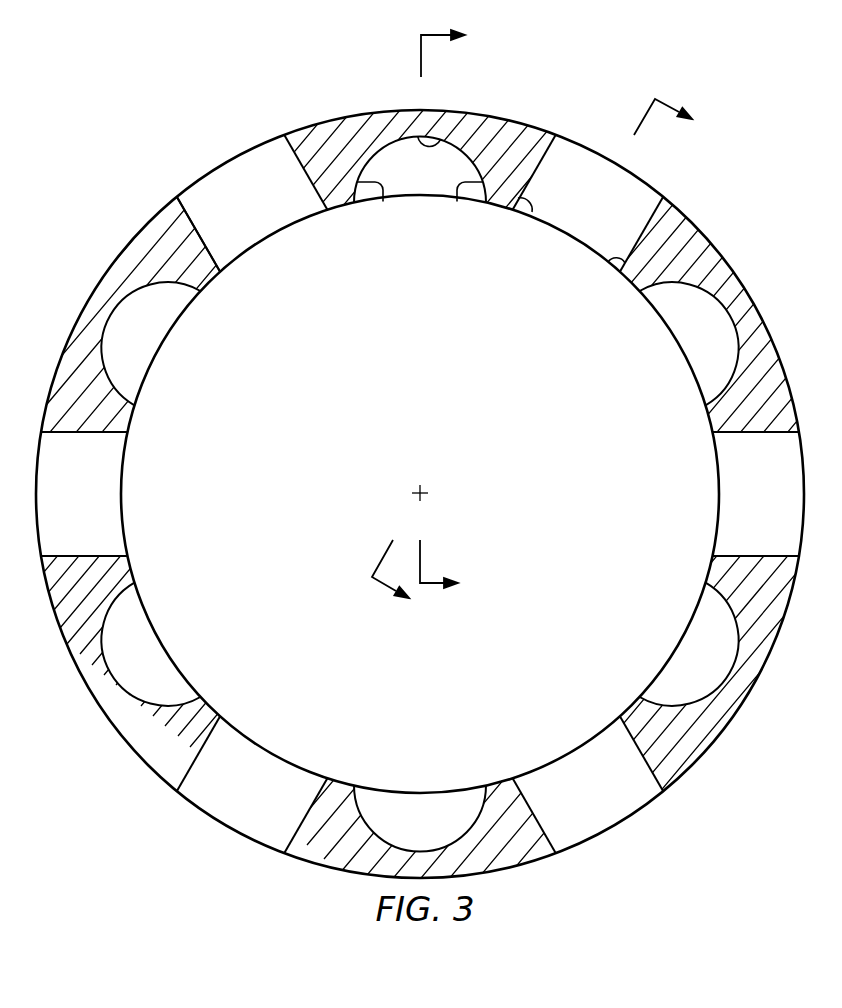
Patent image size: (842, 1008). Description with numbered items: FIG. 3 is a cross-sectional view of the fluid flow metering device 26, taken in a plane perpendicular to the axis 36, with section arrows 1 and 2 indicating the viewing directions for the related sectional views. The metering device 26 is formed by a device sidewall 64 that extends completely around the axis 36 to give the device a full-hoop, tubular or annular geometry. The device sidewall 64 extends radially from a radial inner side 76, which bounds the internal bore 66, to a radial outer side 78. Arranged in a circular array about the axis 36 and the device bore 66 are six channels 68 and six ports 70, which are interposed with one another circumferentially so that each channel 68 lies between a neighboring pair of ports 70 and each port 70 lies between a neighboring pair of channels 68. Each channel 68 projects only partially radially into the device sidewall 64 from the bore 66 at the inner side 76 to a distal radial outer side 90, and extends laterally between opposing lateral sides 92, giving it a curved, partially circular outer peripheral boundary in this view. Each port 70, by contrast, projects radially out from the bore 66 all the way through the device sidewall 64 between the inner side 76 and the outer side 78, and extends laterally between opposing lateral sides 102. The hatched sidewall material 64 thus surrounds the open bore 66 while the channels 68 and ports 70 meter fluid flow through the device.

The metering device 26 is at (200, 100).
The axis 36 is at (425, 490).
The device sidewall 64 is at (673, 240).
The internal bore 66 is at (413, 378).
The channels 68 is at (423, 200).
The ports 70 is at (237, 209).
The radial inner side 76 is at (214, 272).
The radial outer side 78 is at (153, 214).
The distal radial outer side 90 is at (431, 140).
The lateral sides 92 is at (381, 204).
The lateral sides 102 is at (528, 208).
The section line 1 is at (442, 308).
The section line 2 is at (529, 347).